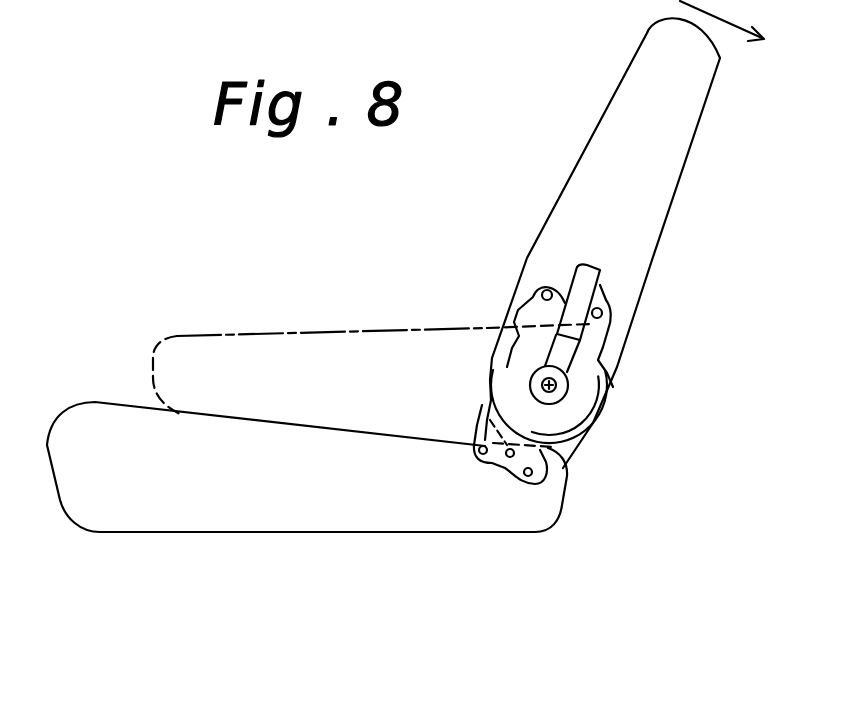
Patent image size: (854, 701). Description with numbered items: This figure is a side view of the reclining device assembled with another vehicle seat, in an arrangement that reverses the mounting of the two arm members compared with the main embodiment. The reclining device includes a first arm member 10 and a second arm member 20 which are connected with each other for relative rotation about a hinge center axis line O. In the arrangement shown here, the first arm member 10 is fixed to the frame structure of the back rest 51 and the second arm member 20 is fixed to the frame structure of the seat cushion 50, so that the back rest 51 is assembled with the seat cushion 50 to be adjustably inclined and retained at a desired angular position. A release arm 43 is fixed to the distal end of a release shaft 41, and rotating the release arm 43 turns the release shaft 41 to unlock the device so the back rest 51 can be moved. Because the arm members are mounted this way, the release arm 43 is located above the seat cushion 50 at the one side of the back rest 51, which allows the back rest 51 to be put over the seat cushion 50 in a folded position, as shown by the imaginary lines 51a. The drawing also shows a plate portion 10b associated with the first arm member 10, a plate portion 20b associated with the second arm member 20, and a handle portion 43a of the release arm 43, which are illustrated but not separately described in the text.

The back rest 51 is at (652, 193).
The imaginary lines showing back rest folded over seat cushion 51a is at (291, 327).
The seat cushion 50 is at (308, 522).
The first arm member 10 is at (486, 364).
The upper bracket plate 10b is at (536, 312).
The second arm member 20 is at (474, 423).
The lower bracket plate 20b is at (553, 473).
The operating handle 43a is at (600, 272).
The release arm 43 is at (576, 352).
The release shaft 41 is at (557, 379).
The hinge center axis line O is at (553, 390).